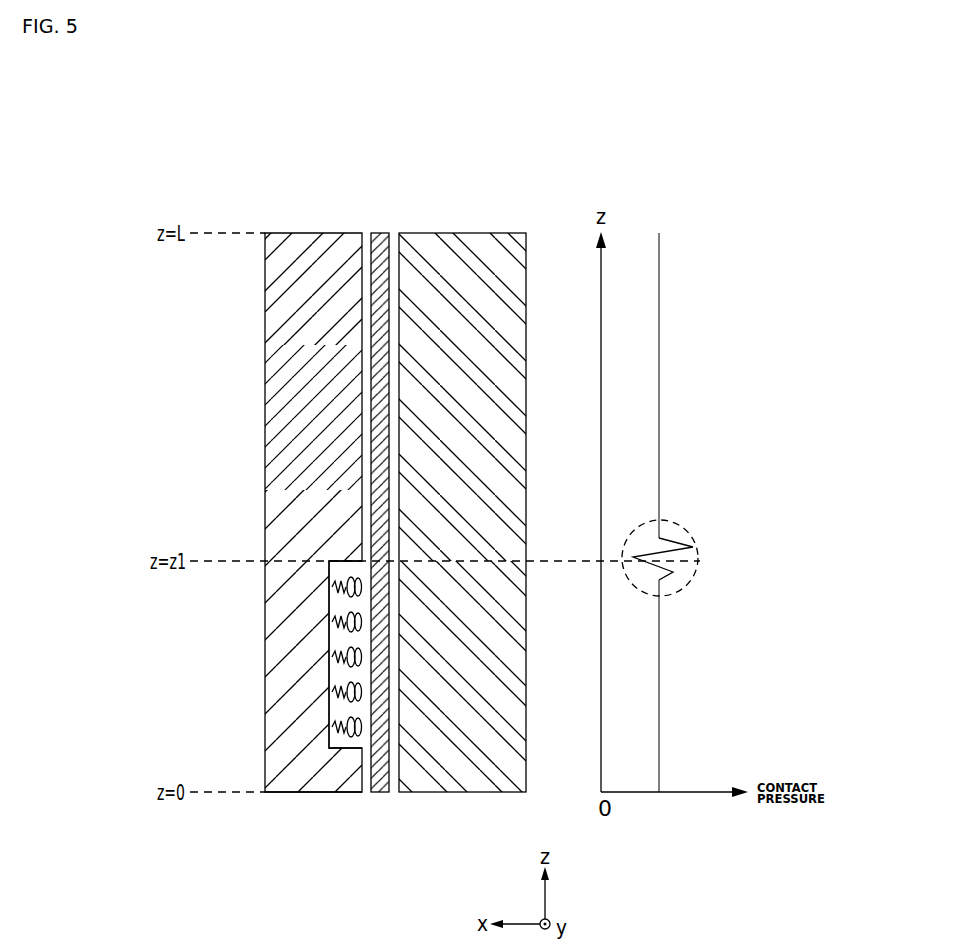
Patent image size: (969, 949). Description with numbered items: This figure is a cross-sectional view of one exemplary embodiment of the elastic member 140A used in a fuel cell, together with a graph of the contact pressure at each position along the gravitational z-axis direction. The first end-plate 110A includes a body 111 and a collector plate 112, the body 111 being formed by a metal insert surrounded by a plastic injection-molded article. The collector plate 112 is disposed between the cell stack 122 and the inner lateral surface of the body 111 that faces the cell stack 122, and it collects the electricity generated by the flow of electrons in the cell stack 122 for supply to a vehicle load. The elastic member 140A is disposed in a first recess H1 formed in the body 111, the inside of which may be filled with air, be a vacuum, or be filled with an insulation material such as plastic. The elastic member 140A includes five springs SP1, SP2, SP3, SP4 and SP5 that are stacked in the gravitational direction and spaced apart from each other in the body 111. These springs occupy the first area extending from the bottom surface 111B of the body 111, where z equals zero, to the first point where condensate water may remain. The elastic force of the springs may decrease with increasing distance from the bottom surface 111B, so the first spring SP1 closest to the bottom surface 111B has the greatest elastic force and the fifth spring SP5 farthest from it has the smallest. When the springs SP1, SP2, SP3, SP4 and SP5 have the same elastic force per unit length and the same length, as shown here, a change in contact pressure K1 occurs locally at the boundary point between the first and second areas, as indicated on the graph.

The first end-plate 110A is at (397, 188).
The body 111 is at (313, 233).
The collector plate 112 is at (377, 233).
The cell stack 122 is at (460, 233).
The bottom surface of the body 111B is at (280, 793).
The first recess H1 is at (340, 752).
The elastic member 140A is at (210, 580).
The first spring SP1 is at (332, 727).
The second spring SP2 is at (332, 692).
The third spring SP3 is at (332, 657).
The fourth spring SP4 is at (332, 622).
The fifth spring SP5 is at (332, 587).
The change in contact pressure K1 is at (695, 523).